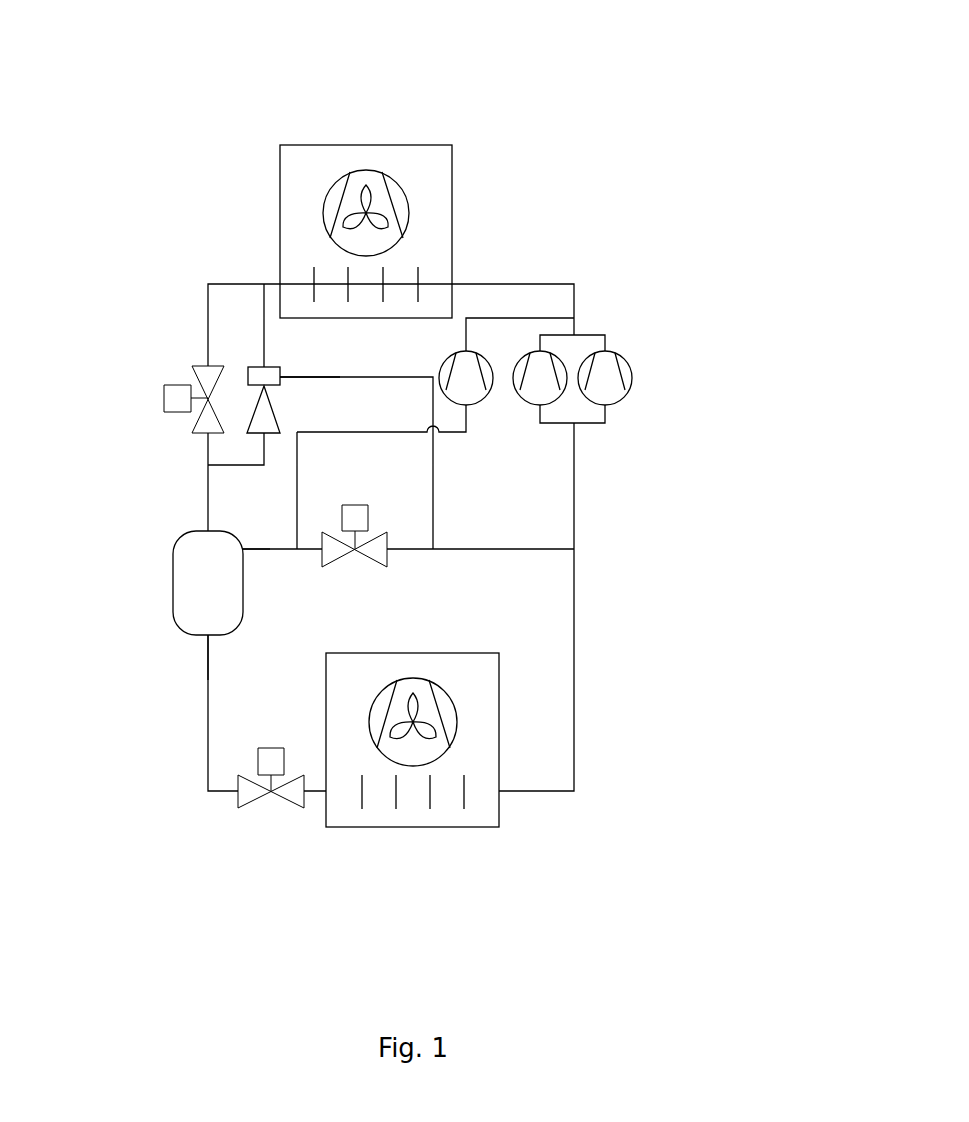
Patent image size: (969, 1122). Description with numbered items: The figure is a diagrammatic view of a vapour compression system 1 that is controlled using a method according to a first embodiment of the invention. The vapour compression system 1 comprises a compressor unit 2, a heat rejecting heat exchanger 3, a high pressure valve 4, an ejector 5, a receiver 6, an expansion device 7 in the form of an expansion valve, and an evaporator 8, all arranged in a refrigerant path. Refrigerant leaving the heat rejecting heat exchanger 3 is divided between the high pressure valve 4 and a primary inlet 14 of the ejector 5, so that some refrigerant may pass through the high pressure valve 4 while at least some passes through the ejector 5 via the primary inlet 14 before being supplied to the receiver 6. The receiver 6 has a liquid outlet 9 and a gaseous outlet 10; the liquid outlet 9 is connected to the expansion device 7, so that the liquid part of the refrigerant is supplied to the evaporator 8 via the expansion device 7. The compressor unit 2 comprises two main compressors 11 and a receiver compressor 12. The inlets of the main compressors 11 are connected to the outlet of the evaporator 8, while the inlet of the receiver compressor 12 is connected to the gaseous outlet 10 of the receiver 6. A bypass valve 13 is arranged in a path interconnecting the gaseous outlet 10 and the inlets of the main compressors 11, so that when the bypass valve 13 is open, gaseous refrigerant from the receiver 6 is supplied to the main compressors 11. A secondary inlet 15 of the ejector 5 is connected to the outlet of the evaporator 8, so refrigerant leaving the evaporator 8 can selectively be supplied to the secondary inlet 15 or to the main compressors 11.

The vapour compression system 1 is at (610, 96).
The compressor unit 2 is at (663, 381).
The heat rejecting heat exchanger 3 is at (423, 157).
The high pressure valve 4 is at (202, 379).
The ejector 5 is at (264, 396).
The receiver 6 is at (180, 582).
The expansion device 7 is at (245, 792).
The evaporator 8 is at (414, 817).
The liquid outlet 9 is at (208, 636).
The gaseous outlet 10 is at (243, 549).
The main compressors 11 is at (600, 372).
The receiver compressor 12 is at (463, 372).
The bypass valve 13 is at (375, 548).
The primary inlet 14 is at (263, 367).
The secondary inlet 15 is at (280, 377).